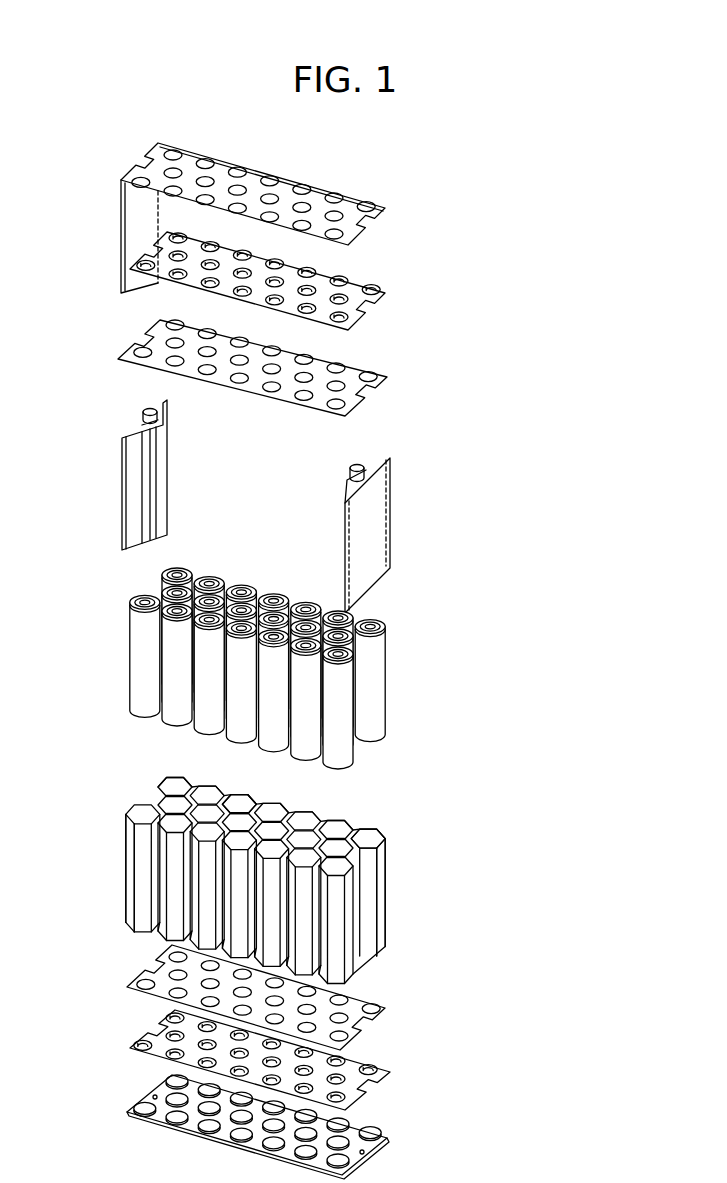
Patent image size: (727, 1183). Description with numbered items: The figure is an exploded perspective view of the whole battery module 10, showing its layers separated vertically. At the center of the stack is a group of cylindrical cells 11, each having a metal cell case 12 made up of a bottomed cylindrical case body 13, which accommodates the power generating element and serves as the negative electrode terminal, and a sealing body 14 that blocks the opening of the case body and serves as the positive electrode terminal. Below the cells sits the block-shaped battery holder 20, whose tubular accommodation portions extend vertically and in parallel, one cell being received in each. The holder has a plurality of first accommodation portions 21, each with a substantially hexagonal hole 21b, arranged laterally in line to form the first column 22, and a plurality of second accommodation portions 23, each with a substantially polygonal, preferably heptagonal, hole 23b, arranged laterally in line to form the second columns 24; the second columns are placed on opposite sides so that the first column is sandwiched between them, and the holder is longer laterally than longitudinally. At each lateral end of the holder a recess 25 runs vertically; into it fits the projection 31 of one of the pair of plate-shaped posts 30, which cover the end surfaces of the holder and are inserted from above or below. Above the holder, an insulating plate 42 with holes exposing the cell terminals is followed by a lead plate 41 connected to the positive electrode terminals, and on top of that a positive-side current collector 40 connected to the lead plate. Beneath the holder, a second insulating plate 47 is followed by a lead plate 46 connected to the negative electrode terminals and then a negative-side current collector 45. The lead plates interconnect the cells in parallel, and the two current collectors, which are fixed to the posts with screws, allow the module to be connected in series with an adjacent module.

The battery module 10 is at (413, 142).
The cylindrical cell 11 is at (377, 658).
The cell case 12 is at (46, 572).
The case body 13 is at (143, 640).
The sealing body 14 is at (143, 593).
The battery holder 20 is at (412, 823).
The first accommodation portion 21 is at (240, 781).
The hole 21b is at (236, 801).
The first column 22 is at (155, 798).
The second accommodation portion 23 is at (370, 807).
The hole 23b is at (362, 829).
The second column 24 is at (116, 817).
The recess 25 is at (363, 857).
The post 30 is at (120, 487).
The projection 31 is at (165, 482).
The positive-side current collector 40 is at (157, 146).
The lead plate 41 is at (160, 272).
The insulating plate 42 is at (125, 352).
The negative-side current collector 45 is at (387, 1140).
The lead plate 46 is at (387, 1071).
The insulating plate 47 is at (387, 1008).